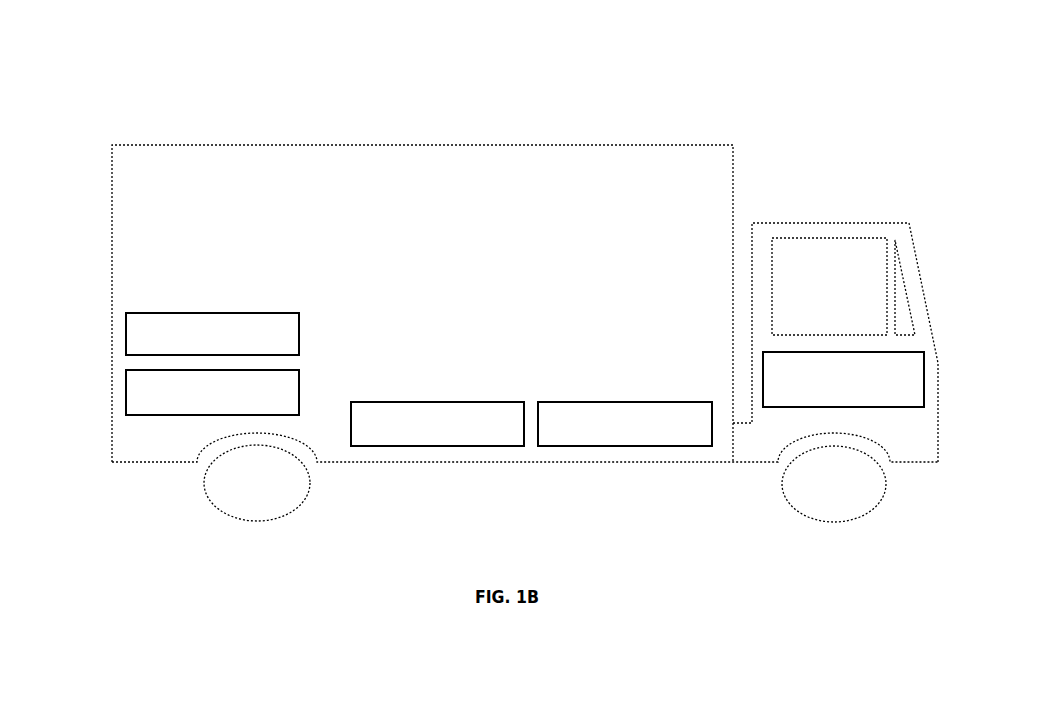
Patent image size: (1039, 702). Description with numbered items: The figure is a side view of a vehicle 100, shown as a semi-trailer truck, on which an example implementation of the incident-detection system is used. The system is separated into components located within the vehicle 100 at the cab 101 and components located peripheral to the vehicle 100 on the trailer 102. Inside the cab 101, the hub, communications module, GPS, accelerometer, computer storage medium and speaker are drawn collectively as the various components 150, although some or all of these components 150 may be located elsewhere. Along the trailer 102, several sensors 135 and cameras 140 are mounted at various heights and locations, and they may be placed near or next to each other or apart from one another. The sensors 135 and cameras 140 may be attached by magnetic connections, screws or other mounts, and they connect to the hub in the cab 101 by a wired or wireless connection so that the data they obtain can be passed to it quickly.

The vehicle 100 is at (168, 85).
The cab 101 is at (938, 390).
The trailer 102 is at (378, 145).
The sensors 135 is at (419, 408).
The cameras 140 is at (325, 379).
The various components 150 is at (910, 379).